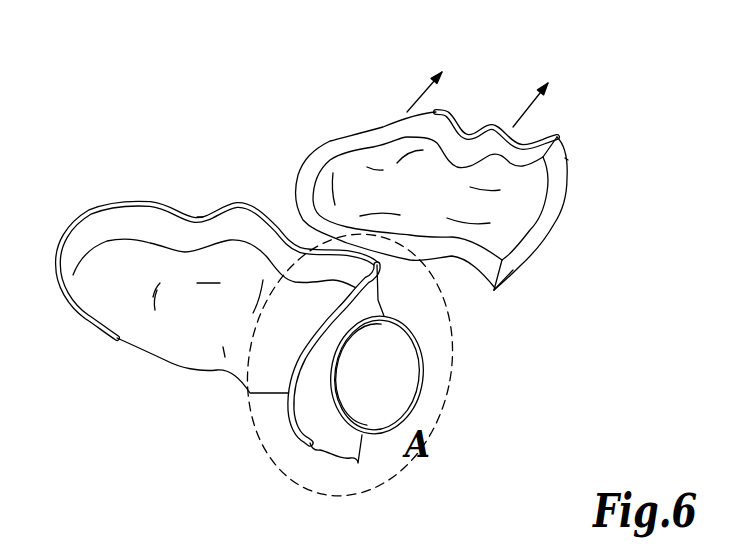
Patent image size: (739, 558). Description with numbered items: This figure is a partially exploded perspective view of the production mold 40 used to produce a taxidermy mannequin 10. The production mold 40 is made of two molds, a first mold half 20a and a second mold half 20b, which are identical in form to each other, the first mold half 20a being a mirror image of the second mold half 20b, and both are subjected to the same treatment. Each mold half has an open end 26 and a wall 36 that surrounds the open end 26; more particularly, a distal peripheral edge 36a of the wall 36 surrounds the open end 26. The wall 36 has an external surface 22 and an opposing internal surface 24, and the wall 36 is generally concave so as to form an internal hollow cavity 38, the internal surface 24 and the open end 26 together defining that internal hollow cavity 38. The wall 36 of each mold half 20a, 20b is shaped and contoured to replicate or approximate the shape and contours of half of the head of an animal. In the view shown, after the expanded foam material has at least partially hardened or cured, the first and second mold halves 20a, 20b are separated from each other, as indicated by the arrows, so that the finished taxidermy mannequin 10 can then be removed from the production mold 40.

The taxidermy mannequin 10 is at (422, 367).
The first mold half 20a is at (115, 222).
The second mold half 20b is at (353, 140).
The external surface 22 is at (217, 330).
The internal surface 24 is at (523, 205).
The open end 26 is at (523, 240).
The wall 36 is at (107, 287).
The distal peripheral edge 36a is at (203, 218).
The internal hollow cavity 38 is at (397, 183).
The production mold 40 is at (603, 97).